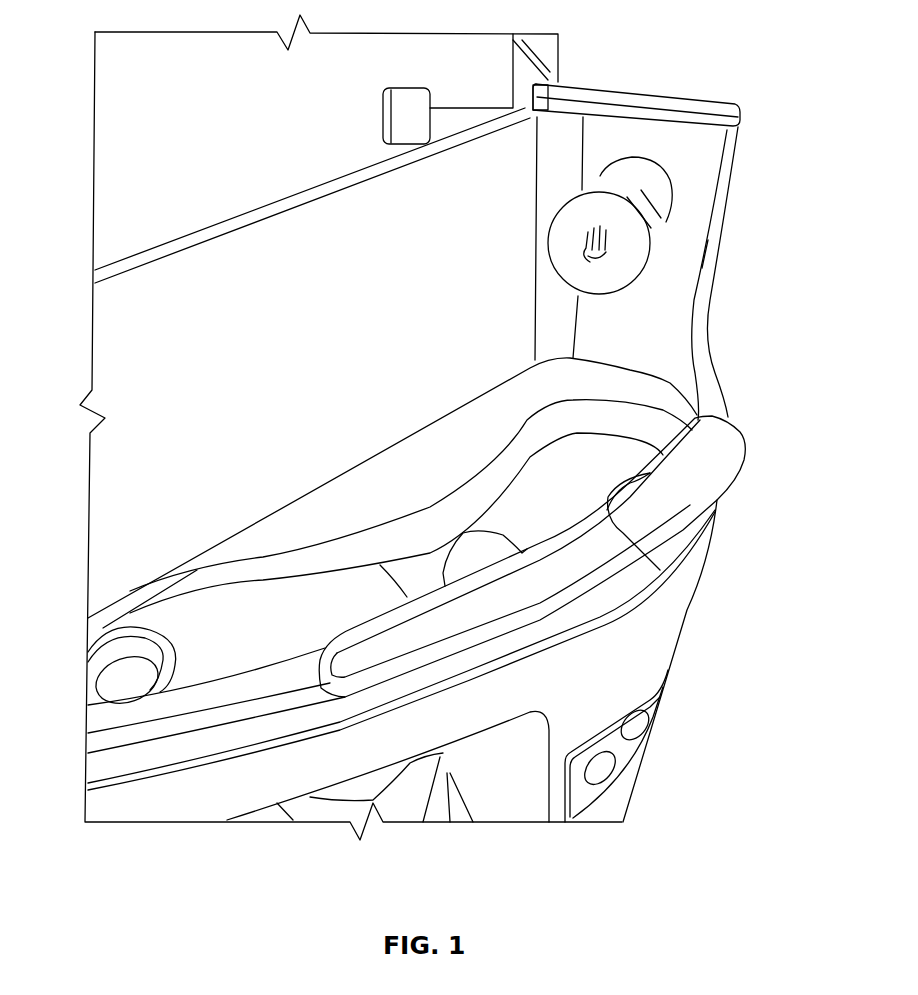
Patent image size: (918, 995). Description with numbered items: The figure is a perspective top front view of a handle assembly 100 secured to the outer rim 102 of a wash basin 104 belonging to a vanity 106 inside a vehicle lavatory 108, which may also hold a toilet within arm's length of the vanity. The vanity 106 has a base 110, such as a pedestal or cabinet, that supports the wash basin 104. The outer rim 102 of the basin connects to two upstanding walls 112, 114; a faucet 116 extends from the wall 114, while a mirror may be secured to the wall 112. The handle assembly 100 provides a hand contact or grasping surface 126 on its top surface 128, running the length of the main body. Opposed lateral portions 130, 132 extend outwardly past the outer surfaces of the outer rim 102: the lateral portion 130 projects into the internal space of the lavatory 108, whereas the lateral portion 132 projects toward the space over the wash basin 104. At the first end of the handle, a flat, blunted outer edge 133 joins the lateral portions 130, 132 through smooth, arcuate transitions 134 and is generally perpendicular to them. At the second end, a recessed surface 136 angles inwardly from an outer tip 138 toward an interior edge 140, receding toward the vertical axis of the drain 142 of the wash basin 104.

The handle assembly 100 is at (672, 490).
The outer rim 102 is at (290, 683).
The wash basin 104 is at (665, 433).
The vanity 106 is at (702, 270).
The vehicle lavatory 108 is at (714, 96).
The base 110 is at (656, 700).
The upstanding wall 112 is at (137, 335).
The upstanding wall 114 is at (717, 215).
The faucet 116 is at (653, 187).
The grasping surface 126 is at (683, 510).
The top surface 128 is at (412, 653).
The lateral portion 130 is at (740, 475).
The lateral portion 132 is at (660, 570).
The flat outer edge 133 is at (707, 425).
The arcuate transitions 134 is at (695, 405).
The recessed surface 136 is at (362, 627).
The outer tip 138 is at (285, 678).
The interior edge 140 is at (407, 597).
The drain 142 is at (460, 542).